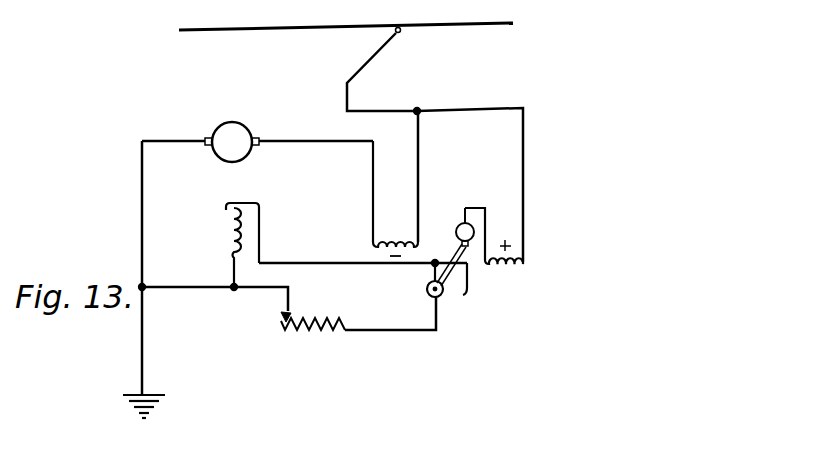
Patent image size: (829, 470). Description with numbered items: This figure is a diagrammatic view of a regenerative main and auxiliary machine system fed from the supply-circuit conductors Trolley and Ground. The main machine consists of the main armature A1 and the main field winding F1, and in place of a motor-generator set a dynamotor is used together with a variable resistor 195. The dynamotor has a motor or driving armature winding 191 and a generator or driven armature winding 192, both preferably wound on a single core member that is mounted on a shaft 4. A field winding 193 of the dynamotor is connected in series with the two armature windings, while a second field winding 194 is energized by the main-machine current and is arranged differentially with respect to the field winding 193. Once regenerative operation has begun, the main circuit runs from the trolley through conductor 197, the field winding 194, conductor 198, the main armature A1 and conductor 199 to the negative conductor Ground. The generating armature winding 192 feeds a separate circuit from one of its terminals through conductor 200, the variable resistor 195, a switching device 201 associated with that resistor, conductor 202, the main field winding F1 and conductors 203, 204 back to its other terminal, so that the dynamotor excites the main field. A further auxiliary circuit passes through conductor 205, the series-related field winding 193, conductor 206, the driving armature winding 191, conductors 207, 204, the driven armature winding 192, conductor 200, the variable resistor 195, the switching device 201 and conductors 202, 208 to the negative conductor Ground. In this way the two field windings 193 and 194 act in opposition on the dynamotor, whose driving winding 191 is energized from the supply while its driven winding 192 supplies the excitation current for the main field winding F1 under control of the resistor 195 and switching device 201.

The main armature A1 is at (243, 123).
The main field winding F1 is at (225, 232).
The driving armature winding 191 is at (459, 230).
The driven armature winding 192 is at (427, 274).
The field winding 193 is at (511, 268).
The second field winding 194 is at (397, 198).
The variable resistor 195 is at (334, 331).
The conductor 197 is at (417, 160).
The conductor 198 is at (403, 107).
The conductor 199 is at (139, 239).
The conductor 200 is at (434, 330).
The switching device 201 is at (289, 318).
The conductor 202 is at (288, 303).
The conductor 203 is at (361, 259).
The conductor 204 is at (433, 273).
The conductor 205 is at (504, 107).
The conductor 206 is at (487, 218).
The conductor 207 is at (474, 294).
The conductor 208 is at (188, 302).
The shaft 4 is at (449, 279).
The supply-circuit conductor Trolley is at (404, 34).
The negative conductor Ground is at (168, 416).